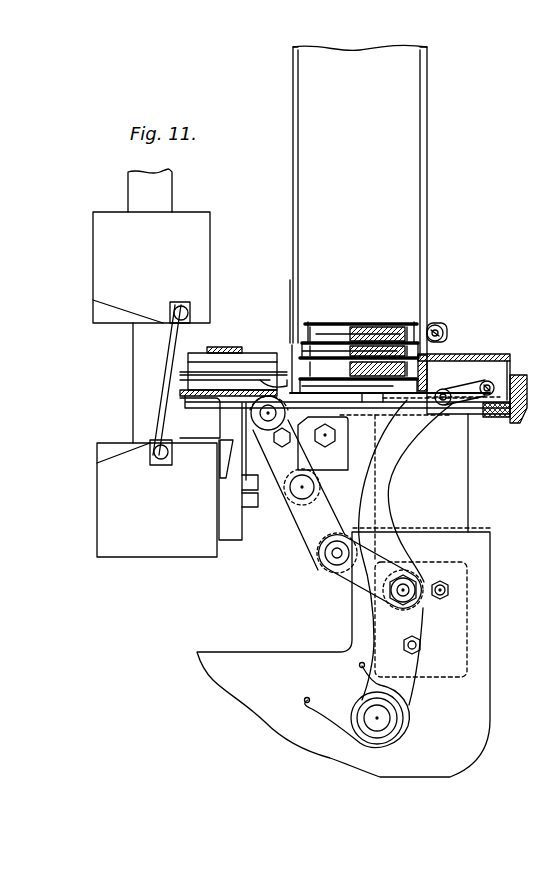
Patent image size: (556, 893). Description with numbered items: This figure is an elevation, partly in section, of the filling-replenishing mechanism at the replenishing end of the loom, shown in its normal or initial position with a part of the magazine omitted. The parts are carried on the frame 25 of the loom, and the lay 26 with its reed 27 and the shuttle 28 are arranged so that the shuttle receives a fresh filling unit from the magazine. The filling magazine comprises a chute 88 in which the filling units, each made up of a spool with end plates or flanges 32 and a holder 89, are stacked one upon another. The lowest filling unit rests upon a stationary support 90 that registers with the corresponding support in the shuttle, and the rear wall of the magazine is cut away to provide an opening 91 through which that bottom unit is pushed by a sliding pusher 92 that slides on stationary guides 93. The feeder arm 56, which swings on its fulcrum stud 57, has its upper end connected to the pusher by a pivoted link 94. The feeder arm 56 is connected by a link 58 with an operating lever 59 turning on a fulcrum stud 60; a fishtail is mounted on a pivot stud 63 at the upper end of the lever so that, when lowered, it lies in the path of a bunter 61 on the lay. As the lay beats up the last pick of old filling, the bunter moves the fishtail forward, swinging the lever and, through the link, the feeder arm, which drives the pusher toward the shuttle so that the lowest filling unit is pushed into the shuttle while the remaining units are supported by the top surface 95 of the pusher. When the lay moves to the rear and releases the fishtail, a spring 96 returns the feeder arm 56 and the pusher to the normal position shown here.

The frame 25 is at (282, 720).
The lay 26 is at (110, 524).
The reed 27 is at (186, 365).
The shuttle 28 is at (165, 413).
The end plates or flanges 32 is at (227, 347).
The feeder arm 56 is at (383, 503).
The fulcrum stud 57 is at (374, 720).
The link 58 is at (357, 586).
The operating lever 59 is at (323, 530).
The fulcrum stud 60 is at (300, 488).
The bunter 61 is at (220, 446).
The pivot stud 63 is at (266, 414).
The chute 88 is at (430, 146).
The holders 89 is at (186, 386).
The stationary support 90 is at (330, 390).
The opening 91 is at (292, 345).
The sliding pusher 92 is at (505, 372).
The stationary guides 93 is at (360, 398).
The pivoted link 94 is at (463, 398).
The top surface 95 is at (478, 354).
The spring 96 is at (400, 733).